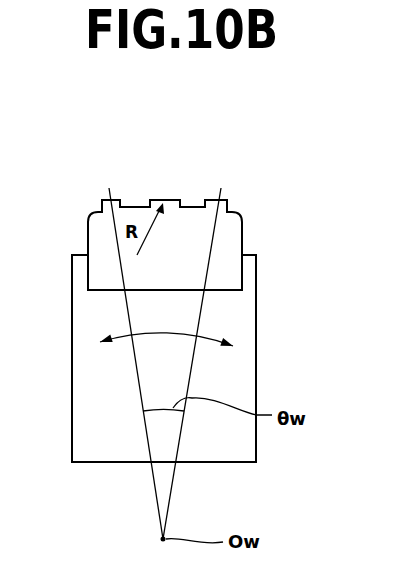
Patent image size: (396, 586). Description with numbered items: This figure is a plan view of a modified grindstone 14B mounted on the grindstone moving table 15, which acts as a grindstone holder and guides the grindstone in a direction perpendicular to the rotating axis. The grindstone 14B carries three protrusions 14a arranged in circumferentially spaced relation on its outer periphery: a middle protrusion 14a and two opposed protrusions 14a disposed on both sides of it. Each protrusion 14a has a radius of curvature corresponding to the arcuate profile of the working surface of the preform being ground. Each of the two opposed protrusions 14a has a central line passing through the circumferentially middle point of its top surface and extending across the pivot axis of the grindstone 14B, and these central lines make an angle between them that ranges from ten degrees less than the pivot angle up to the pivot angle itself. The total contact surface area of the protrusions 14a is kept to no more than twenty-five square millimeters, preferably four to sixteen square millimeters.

The protrusion 14a is at (110, 190).
The grindstone 14B is at (235, 238).
The grindstone moving table 15 is at (237, 372).